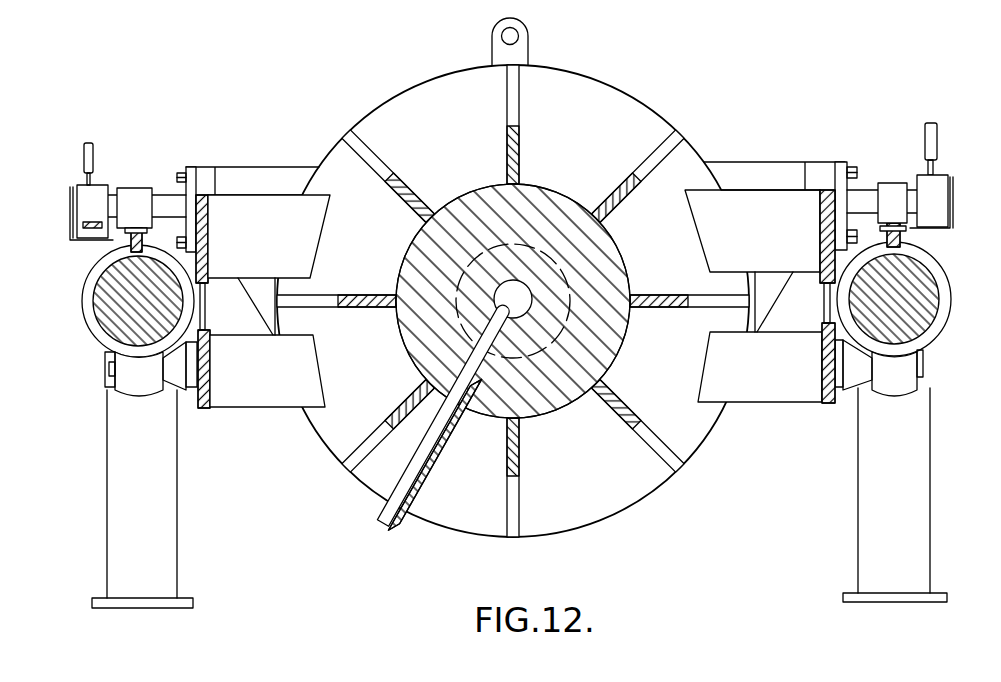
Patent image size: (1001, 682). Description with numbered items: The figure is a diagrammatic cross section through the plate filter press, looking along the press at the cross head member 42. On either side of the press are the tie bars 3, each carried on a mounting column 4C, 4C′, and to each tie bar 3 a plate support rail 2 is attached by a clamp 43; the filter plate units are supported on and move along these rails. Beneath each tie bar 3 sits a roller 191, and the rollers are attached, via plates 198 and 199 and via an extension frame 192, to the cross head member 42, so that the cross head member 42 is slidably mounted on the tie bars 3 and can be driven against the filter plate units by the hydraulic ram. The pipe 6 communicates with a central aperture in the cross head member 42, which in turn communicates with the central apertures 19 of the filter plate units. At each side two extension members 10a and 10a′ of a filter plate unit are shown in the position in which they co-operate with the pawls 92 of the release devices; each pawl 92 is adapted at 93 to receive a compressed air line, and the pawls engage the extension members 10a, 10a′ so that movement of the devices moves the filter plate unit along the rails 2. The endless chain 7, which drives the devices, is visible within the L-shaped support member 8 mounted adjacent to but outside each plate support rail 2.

The plate support rail 2 is at (125, 247).
The tie bar 3 is at (108, 318).
The pipe 6 is at (372, 512).
The endless chain 7 is at (88, 221).
The support member 8 is at (72, 188).
The extension member 10a is at (917, 202).
The extension member 10a′ is at (165, 184).
The central aperture 19 is at (500, 288).
The cross head member 42 is at (636, 496).
The clamp 43 is at (88, 288).
The pawl 92 is at (940, 183).
The compressed air line connection 93 is at (92, 182).
The roller 191 is at (137, 383).
The extension frame 192 is at (247, 400).
The plate 198 is at (826, 192).
The plate 199 is at (830, 405).
The mounting column 4C is at (868, 523).
The mounting column 4C′ is at (167, 507).